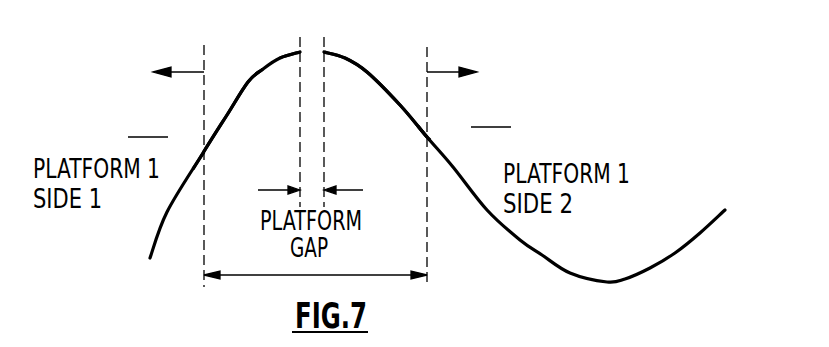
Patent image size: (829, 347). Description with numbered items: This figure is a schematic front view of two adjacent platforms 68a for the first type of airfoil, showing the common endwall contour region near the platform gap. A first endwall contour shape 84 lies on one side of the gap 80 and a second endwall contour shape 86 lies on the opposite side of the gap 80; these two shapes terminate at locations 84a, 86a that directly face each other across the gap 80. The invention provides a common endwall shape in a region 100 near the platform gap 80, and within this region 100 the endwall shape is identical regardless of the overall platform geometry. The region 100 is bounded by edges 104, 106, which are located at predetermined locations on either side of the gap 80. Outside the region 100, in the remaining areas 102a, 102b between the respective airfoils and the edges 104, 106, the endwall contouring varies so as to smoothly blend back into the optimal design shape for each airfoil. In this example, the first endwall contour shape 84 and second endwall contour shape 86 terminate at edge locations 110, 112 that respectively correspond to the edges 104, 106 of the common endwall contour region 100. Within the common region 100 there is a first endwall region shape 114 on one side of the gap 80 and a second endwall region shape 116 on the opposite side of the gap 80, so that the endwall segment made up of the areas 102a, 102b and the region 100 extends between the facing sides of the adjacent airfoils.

The platform 68a is at (319, 120).
The platform gap 80 is at (312, 152).
The first endwall contour shape 84 is at (167, 212).
The termination location of first endwall contour shape 84a is at (300, 53).
The second endwall contour shape 86 is at (542, 255).
The termination location of second endwall contour shape 86a is at (327, 52).
The common endwall contour region 100 is at (348, 275).
The remaining area 102a is at (182, 72).
The remaining area 102b is at (447, 72).
The edge of common region 104 is at (202, 237).
The edge of common region 106 is at (428, 225).
The edge location 110 is at (202, 153).
The edge location 112 is at (425, 137).
The first endwall region shape 114 is at (248, 82).
The second endwall region shape 116 is at (367, 72).